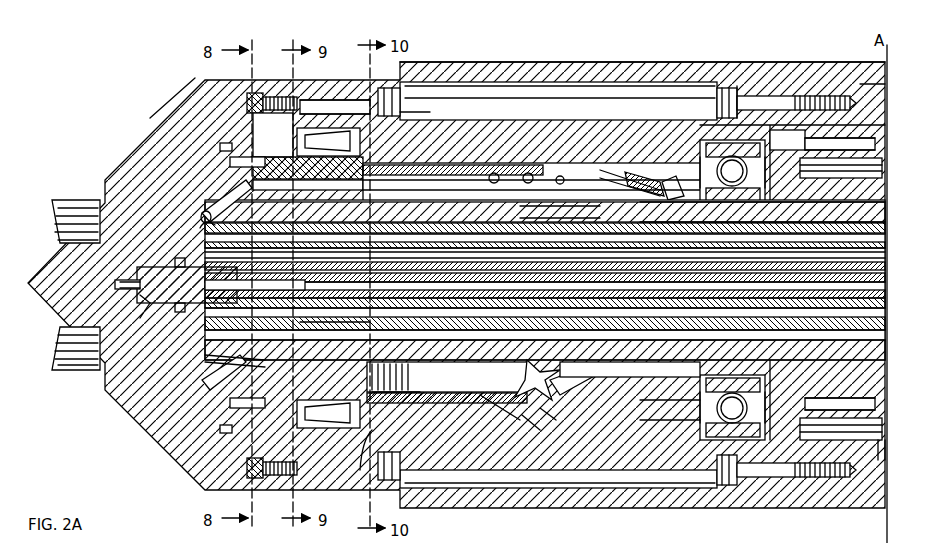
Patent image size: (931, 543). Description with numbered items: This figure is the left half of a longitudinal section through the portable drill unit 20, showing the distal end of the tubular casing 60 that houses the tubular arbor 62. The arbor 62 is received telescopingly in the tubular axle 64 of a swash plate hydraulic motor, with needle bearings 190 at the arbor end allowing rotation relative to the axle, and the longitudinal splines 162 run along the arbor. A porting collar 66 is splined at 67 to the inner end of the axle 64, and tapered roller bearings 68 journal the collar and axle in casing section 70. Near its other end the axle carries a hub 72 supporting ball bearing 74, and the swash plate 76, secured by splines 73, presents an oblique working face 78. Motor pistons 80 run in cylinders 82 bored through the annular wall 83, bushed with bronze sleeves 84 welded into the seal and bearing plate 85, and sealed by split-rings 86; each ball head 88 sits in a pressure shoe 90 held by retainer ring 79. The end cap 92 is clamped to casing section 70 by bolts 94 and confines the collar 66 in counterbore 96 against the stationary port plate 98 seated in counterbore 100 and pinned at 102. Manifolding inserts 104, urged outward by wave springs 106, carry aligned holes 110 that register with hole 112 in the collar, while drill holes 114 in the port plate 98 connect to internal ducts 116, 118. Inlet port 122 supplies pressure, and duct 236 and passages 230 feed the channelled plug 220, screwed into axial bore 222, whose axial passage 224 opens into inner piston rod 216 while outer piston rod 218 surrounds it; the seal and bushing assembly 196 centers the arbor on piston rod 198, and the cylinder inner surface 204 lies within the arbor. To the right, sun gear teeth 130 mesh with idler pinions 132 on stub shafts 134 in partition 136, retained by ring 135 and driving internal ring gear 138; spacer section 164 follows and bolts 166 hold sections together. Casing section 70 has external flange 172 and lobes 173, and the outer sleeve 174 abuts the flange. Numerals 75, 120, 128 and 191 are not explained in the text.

The drill unit 20 is at (628, 52).
The tubular casing 60 is at (180, 95).
The tubular arbor 62 is at (812, 258).
The tubular axle 64 is at (560, 226).
The porting collar 66 is at (297, 468).
The splines 67 is at (340, 326).
The tapered roller bearings 68 is at (360, 140).
The casing section 70 is at (552, 124).
The hub 72 is at (770, 378).
The splines 73 is at (595, 214).
The ball bearing 74 is at (748, 171).
The housing end 75 is at (698, 422).
The swash plate 76 is at (703, 138).
The working face 78 is at (568, 385).
The retainer ring 79 is at (548, 380).
The motor pistons 80 is at (612, 170).
The cylinders 82 is at (488, 172).
The annular wall 83 is at (520, 212).
The bronze sleeves 84 is at (526, 172).
The seal and bearing plate 85 is at (392, 400).
The split-rings 86 is at (556, 176).
The ball head 88 is at (642, 172).
The pressure shoe 90 is at (674, 176).
The end cap 92 is at (150, 118).
The bolts 94 is at (400, 100).
The counterbore 96 is at (400, 112).
The port plate 98 is at (248, 352).
The counterbore 100 is at (290, 150).
The pin 102 is at (240, 150).
The manifolding inserts 104 is at (368, 104).
The wave springs 106 is at (470, 388).
The aligned holes 110 is at (440, 168).
The registering hole 112 is at (420, 190).
The drill holes 114 is at (272, 192).
The internal duct 116 is at (175, 195).
The internal duct 118 is at (210, 370).
The clip 120 is at (228, 160).
The inlet port 122 is at (72, 200).
The boss 128 is at (75, 372).
The sun gear teeth 130 is at (825, 398).
The idler pinions 132 is at (808, 440).
The stub shafts 134 is at (828, 178).
The ring 135 is at (878, 442).
The partition 136 is at (800, 142).
The internal ring gear 138 is at (830, 140).
The longitudinal splines 162 is at (590, 364).
The spacer section 164 is at (866, 84).
The bolts 166 is at (772, 90).
The external flange 172 is at (365, 448).
The lobes 173 is at (740, 88).
The outer sleeve 174 is at (540, 505).
The needle bearings 190 is at (360, 238).
The bore 191 is at (252, 288).
The pressure seal and bushing assembly 196 is at (198, 222).
The tubular piston rod 198 is at (305, 288).
The inner surface 204 is at (690, 270).
The inner piston rod 216 is at (510, 270).
The outer piston rod 218 is at (450, 242).
The channelled plug 220 is at (175, 340).
The axial bore 222 is at (185, 314).
The axial passage 224 is at (148, 306).
The passages 230 is at (180, 256).
The duct 236 is at (118, 280).